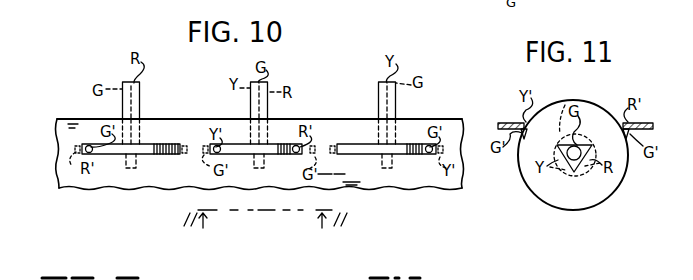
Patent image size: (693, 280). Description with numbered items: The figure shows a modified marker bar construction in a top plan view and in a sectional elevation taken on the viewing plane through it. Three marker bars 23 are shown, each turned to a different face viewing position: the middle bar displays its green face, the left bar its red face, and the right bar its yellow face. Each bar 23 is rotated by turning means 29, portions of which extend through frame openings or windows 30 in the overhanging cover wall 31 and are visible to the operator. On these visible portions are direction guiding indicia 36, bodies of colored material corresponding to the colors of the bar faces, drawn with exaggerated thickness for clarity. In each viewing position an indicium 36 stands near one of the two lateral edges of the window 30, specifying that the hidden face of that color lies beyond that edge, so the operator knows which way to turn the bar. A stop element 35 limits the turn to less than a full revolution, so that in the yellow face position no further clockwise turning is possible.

In FIG. 10, the marker bar 23 is at (140, 97).
In FIG. 11, the marker bar 23 is at (577, 173).
In FIG. 10, the turning means 29 is at (140, 150).
In FIG. 11, the turning means 29 is at (607, 193).
In FIG. 10, the frame openings or windows 30 is at (106, 155).
In FIG. 10, the overhanging cover wall 31 is at (83, 118).
In FIG. 11, the overhanging cover wall 31 is at (506, 122).
In FIG. 11, the stop element 35 is at (573, 93).
In FIG. 10, the direction guiding indicia 36 is at (228, 145).
In FIG. 11, the direction guiding indicia 36 is at (634, 118).